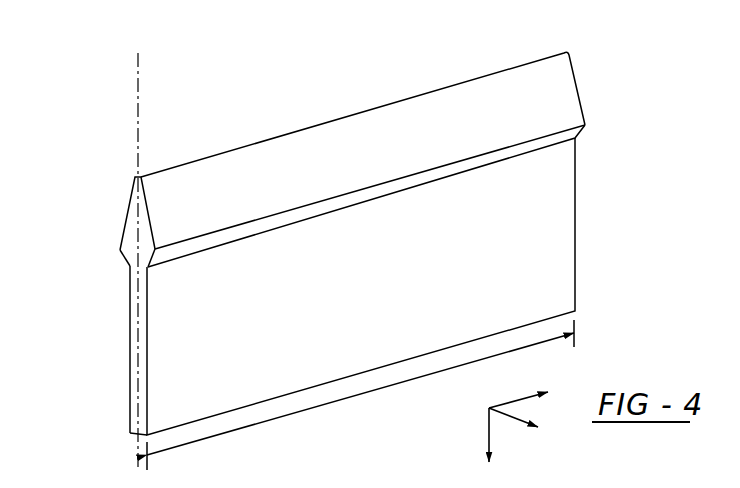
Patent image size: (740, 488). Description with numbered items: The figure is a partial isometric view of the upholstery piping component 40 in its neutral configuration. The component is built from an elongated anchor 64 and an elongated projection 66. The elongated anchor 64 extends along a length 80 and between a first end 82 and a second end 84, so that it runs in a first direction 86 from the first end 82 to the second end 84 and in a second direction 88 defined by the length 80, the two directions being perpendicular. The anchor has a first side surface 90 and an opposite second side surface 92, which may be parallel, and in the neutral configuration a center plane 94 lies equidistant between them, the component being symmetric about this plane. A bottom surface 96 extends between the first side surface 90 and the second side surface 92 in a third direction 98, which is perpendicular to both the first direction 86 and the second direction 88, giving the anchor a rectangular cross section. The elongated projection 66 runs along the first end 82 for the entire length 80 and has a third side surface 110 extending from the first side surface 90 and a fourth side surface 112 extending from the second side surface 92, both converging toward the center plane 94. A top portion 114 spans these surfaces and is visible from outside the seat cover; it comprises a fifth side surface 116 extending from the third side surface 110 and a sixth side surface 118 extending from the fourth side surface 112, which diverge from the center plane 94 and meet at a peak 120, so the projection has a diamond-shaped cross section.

The upholstery piping component 40 is at (349, 234).
The elongated anchor 64 is at (557, 228).
The elongated projection 66 is at (407, 125).
The length 80 is at (323, 407).
The first end 82 is at (105, 349).
The second end 84 is at (88, 440).
The first direction 86 is at (486, 428).
The second direction 88 is at (512, 398).
The first side surface 90 is at (108, 349).
The second side surface 92 is at (167, 373).
The center plane 94 is at (138, 80).
The bottom surface 96 is at (135, 438).
The third direction 98 is at (520, 428).
The third side surface 110 is at (120, 255).
The fourth side surface 112 is at (246, 232).
The top portion 114 is at (375, 125).
The fifth side surface 116 is at (122, 213).
The sixth side surface 118 is at (363, 145).
The peak 120 is at (363, 123).